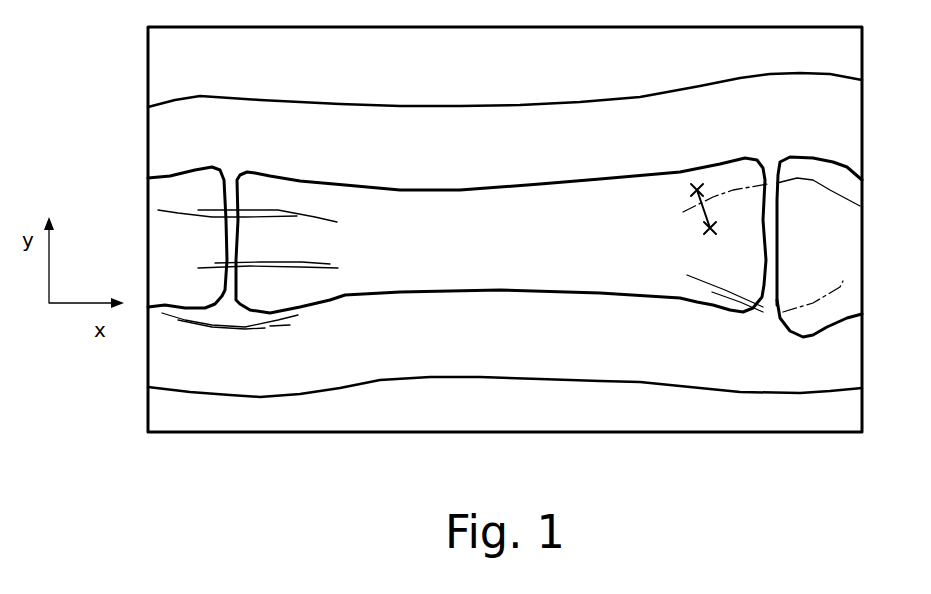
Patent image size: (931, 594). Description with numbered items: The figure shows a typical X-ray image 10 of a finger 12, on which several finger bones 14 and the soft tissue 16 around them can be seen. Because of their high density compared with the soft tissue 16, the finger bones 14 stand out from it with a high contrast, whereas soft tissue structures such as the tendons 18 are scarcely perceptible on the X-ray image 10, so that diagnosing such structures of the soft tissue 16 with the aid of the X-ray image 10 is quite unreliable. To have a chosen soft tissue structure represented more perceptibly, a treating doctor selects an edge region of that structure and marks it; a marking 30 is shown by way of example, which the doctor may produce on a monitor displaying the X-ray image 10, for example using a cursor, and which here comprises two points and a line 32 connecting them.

The X-ray image 10 is at (257, 473).
The finger 12 is at (668, 410).
The finger bones 14 is at (175, 188).
The soft tissue 16 is at (428, 365).
The tendons 18 is at (267, 327).
The marking 30 is at (678, 188).
The line 32 is at (695, 203).